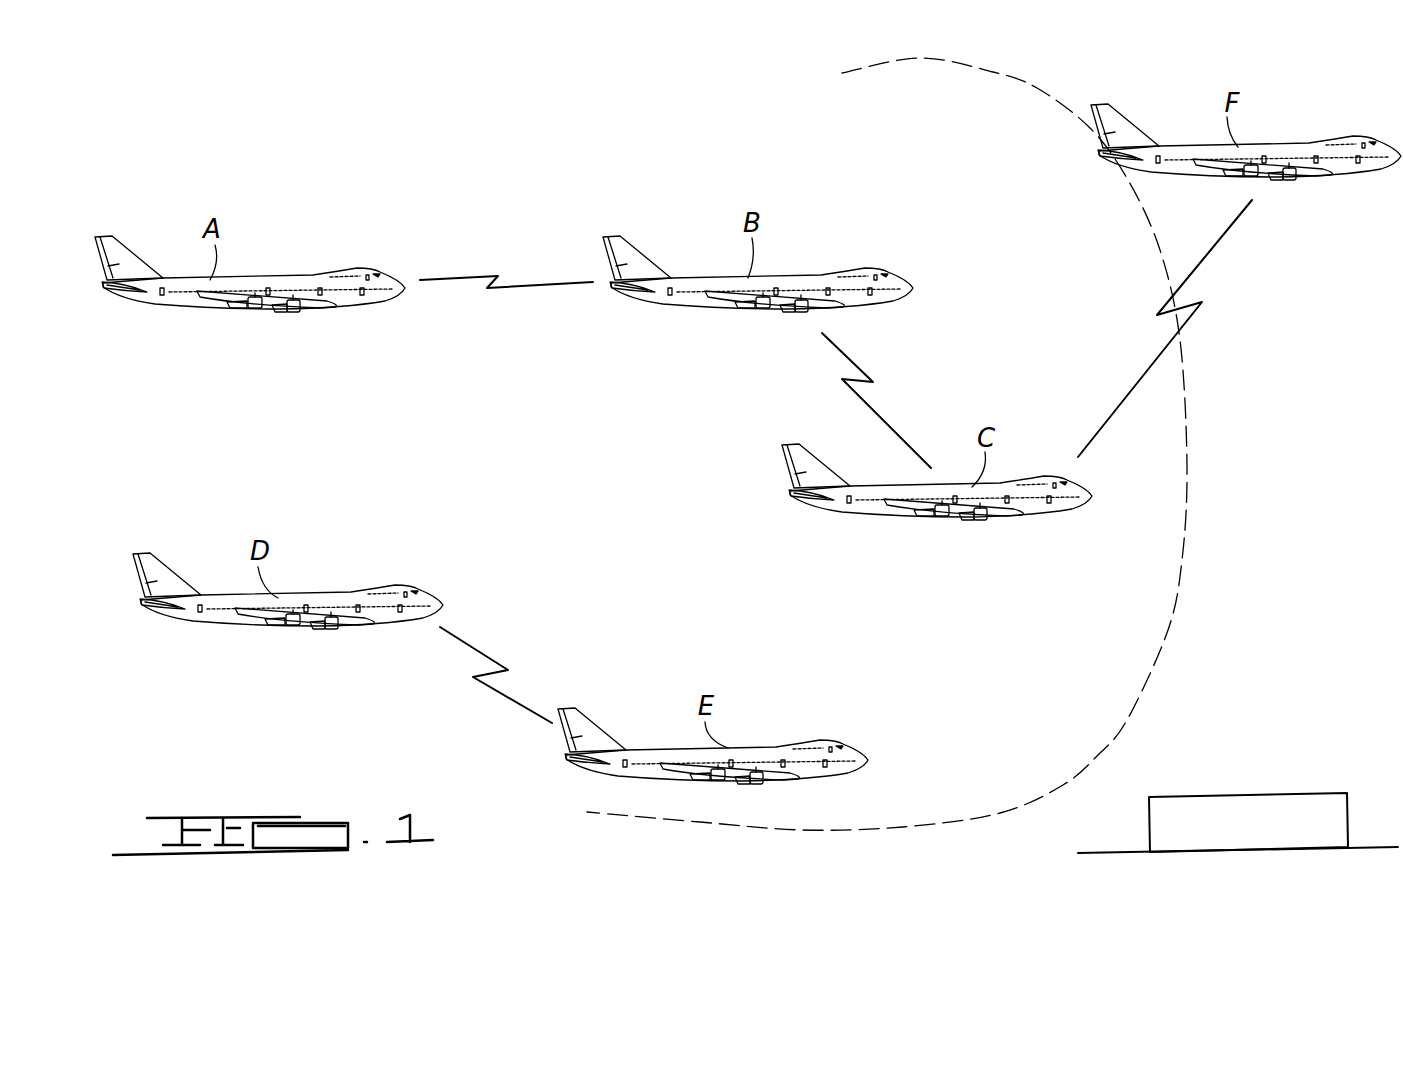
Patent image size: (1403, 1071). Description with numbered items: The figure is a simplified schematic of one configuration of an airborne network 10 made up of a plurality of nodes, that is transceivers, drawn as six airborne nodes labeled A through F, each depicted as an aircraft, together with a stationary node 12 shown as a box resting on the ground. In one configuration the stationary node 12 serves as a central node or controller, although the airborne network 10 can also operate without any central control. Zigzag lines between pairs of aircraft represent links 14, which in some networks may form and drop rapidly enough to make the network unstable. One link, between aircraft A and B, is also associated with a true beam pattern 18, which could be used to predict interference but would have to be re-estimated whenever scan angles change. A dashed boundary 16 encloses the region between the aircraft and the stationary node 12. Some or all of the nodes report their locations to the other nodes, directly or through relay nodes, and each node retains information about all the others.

The airborne network 10 is at (408, 148).
The stationary node 12 is at (1262, 803).
The links 14 is at (548, 287).
The communication range boundary 16 is at (1098, 755).
The true beam patterns 18 is at (458, 275).